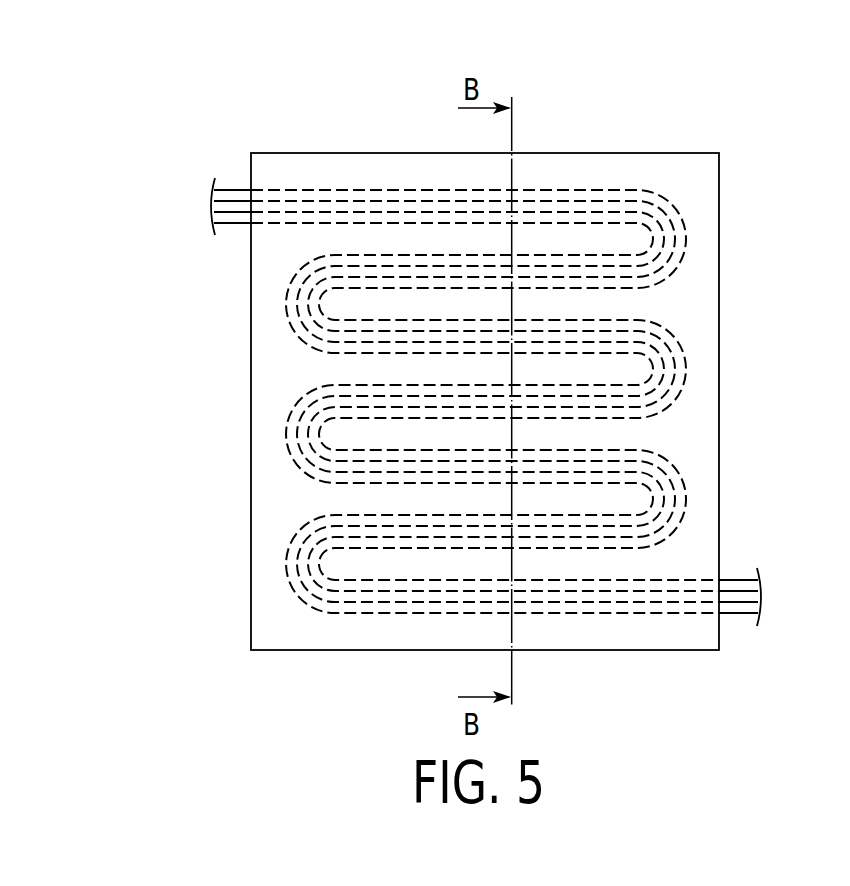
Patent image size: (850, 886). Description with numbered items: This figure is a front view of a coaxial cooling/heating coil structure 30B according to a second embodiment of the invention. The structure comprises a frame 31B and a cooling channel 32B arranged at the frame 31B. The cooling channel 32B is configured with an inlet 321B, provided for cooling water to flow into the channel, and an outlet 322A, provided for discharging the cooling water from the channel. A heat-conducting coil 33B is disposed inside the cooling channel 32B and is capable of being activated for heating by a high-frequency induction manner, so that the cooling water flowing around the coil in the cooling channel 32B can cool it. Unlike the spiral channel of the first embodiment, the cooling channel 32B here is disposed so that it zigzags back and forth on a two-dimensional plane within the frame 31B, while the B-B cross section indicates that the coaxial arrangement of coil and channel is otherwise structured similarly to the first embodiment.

The coaxial cooling/heating coil structure 30B is at (516, 41).
The frame 31B is at (633, 153).
The cooling channel 32B is at (292, 192).
The heat-conducting coil 33B is at (386, 208).
The inlet 321B is at (212, 207).
The outlet 322A is at (765, 594).